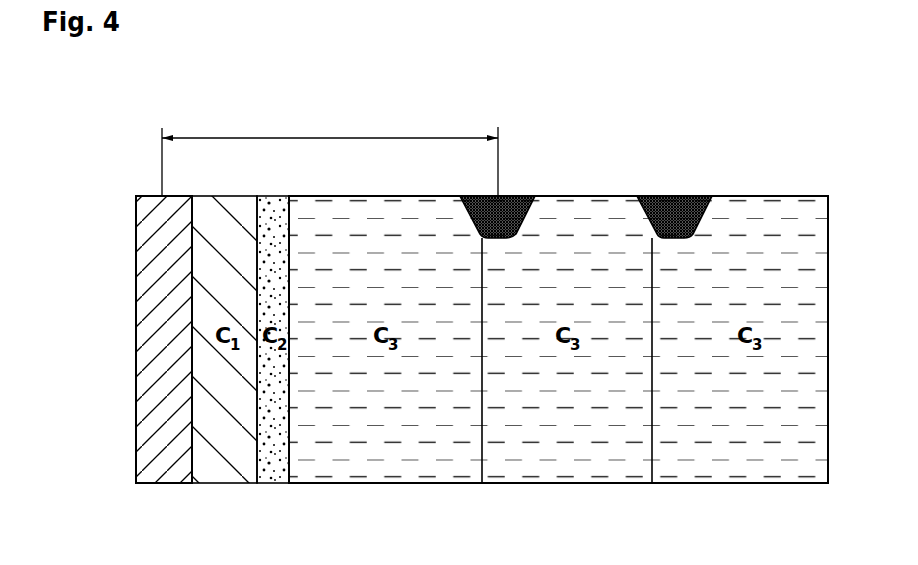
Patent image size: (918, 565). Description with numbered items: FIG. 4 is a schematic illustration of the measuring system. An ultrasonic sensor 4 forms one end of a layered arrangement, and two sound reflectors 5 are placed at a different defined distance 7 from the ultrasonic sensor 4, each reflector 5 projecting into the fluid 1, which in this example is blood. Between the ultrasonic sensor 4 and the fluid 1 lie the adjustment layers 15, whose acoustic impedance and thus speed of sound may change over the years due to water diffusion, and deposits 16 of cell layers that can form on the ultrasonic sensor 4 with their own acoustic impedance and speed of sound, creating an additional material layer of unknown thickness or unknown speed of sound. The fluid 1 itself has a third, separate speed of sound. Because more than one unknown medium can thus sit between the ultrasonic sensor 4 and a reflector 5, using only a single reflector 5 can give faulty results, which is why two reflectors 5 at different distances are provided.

The fluid 1 is at (372, 468).
The ultrasonic sensor 4 is at (157, 463).
The sound reflector 5 is at (509, 207).
The distance 7 is at (317, 137).
The adjustment layers 15 is at (217, 468).
The deposits 16 is at (276, 467).